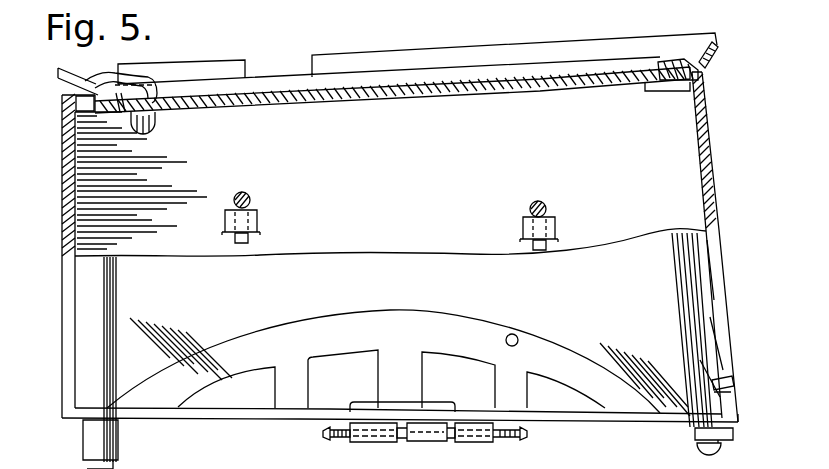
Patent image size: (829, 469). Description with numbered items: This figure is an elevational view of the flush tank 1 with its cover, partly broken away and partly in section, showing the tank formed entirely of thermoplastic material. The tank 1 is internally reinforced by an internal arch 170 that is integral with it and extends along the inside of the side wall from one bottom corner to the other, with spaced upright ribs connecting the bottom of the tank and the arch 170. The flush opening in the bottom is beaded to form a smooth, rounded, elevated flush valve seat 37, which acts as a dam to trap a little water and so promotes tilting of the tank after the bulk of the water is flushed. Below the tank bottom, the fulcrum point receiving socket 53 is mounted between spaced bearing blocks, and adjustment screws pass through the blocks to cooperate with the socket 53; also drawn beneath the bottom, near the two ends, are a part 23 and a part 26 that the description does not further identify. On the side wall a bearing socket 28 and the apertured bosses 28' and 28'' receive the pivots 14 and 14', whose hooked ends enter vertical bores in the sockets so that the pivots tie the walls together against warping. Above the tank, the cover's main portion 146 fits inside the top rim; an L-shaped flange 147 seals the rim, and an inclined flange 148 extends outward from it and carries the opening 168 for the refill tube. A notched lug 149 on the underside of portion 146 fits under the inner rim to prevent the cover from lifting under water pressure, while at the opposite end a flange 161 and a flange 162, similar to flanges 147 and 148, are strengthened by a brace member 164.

The flush tank 1 is at (723, 190).
The pivot 14 is at (555, 198).
The pivot 14' is at (261, 192).
The leg 23 is at (119, 447).
The leg foot 26 is at (699, 451).
The bearing socket 28 is at (526, 326).
The apertured boss 28' is at (560, 228).
The bearing socket 28'' is at (267, 221).
The flush valve seat 37 is at (443, 402).
The fulcrum point receiving socket 53 is at (414, 442).
The main portion of cover 146 is at (504, 95).
The L-shaped flange 147 is at (672, 70).
The inclined flange 148 is at (711, 54).
The notched lug 149 is at (672, 93).
The flange 161 is at (115, 111).
The flange 162 is at (60, 71).
The brace member 164 is at (147, 83).
The notch or opening 168 is at (273, 74).
The internal arch 170 is at (222, 342).